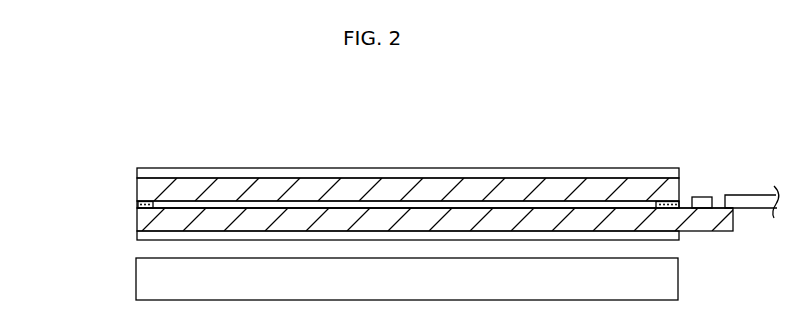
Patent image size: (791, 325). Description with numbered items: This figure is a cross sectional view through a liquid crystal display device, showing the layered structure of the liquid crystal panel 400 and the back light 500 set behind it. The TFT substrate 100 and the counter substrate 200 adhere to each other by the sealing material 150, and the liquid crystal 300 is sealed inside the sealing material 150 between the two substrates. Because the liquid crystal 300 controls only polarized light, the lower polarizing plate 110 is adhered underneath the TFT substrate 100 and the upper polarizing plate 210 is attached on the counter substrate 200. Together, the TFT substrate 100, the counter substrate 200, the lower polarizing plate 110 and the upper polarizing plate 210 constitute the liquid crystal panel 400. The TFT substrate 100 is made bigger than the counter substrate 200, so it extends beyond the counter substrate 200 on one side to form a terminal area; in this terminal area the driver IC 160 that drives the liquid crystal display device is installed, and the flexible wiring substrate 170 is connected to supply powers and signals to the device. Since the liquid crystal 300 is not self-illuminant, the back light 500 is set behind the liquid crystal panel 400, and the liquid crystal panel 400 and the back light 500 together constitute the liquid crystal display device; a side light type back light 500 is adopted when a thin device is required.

The liquid crystal panel 400 is at (77, 155).
The upper polarizing plate 210 is at (137, 173).
The counter substrate 200 is at (137, 190).
The sealing material 150 is at (138, 204).
The TFT substrate 100 is at (137, 219).
The lower polarizing plate 110 is at (137, 236).
The liquid crystal 300 is at (468, 206).
The driver IC 160 is at (700, 197).
The flexible wiring substrate 170 is at (751, 195).
The back light 500 is at (143, 287).